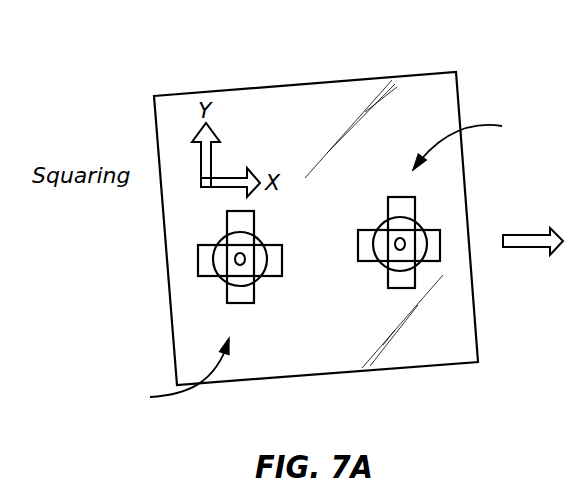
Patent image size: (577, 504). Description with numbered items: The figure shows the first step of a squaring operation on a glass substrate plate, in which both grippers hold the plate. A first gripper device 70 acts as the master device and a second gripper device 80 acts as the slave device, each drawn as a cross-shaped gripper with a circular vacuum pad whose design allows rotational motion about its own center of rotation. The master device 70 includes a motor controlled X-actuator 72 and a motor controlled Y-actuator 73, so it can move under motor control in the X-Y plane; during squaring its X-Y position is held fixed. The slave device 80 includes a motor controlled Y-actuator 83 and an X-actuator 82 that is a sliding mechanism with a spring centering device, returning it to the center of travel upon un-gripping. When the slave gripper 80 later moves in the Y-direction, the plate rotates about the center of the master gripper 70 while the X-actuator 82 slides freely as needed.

The first gripper device 70 is at (473, 143).
The motor controlled X-actuator 72 is at (372, 230).
The motor controlled Y-actuator 73 is at (404, 288).
The second gripper device 80 is at (171, 375).
The X-actuator 82 is at (213, 277).
The motor controlled Y-actuator 83 is at (243, 304).